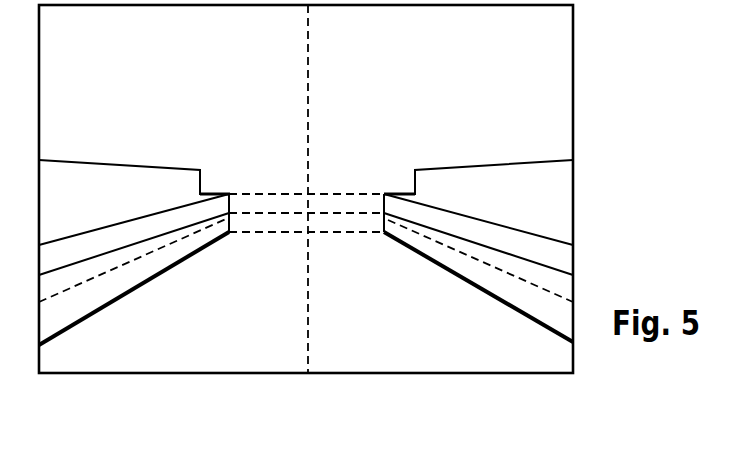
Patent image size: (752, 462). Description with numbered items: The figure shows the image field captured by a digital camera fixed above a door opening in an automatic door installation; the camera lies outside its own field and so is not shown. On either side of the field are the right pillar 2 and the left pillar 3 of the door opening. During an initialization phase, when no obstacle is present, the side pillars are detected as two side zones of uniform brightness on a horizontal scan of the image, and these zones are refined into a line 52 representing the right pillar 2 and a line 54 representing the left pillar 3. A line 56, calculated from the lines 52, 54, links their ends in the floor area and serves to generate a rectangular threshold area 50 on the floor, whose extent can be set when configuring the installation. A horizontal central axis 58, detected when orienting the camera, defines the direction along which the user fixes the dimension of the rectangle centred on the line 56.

The right pillar 2 is at (465, 268).
The left pillar 3 is at (134, 269).
The threshold area 50 is at (350, 193).
The line representative of the right pillar 52 is at (162, 245).
The line representative of the left pillar 54 is at (423, 235).
The line linking the pillar lines 56 is at (266, 214).
The horizontal central axis 58 is at (308, 82).